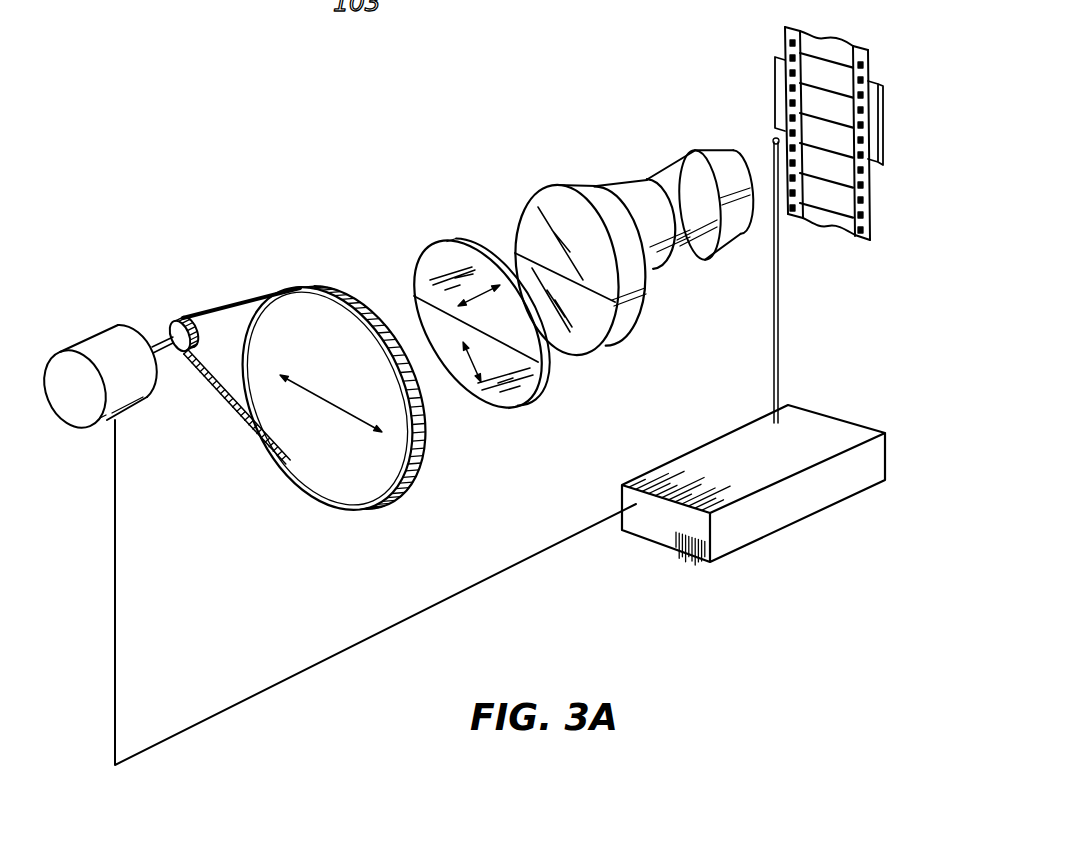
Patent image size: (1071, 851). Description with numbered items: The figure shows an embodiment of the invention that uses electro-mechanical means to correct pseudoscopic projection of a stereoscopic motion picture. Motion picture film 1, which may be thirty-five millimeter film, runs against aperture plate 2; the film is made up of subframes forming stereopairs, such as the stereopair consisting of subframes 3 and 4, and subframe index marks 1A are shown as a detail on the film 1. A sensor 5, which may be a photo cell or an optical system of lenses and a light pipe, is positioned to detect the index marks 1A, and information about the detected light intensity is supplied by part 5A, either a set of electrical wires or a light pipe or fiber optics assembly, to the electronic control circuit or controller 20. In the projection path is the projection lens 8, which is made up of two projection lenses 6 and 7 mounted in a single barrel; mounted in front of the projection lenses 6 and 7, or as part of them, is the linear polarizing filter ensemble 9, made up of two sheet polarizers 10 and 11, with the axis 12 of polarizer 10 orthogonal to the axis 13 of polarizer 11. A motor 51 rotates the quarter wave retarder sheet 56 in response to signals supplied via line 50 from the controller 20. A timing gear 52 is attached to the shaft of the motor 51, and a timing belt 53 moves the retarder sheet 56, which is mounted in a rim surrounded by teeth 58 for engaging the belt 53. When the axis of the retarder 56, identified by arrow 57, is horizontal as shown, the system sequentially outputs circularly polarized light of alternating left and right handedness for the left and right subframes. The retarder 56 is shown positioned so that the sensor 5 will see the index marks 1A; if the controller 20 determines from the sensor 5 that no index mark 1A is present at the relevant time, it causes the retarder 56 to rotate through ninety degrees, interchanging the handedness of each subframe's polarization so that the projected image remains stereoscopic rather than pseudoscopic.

The motion picture film 1 is at (853, 50).
The subframe index marks 1A is at (787, 67).
The aperture plate 2 is at (878, 83).
The subframe 3 is at (837, 107).
The subframe 4 is at (835, 130).
The sensor 5 is at (777, 140).
The part 5A is at (778, 290).
The projection lens 6 is at (641, 181).
The projection lens 7 is at (620, 345).
The projection lens 8 is at (545, 193).
The linear polarizing filter ensemble 9 is at (413, 277).
The sheet polarizer 10 is at (430, 245).
The sheet polarizer 11 is at (523, 405).
The axis 12 is at (482, 293).
The axis 13 is at (452, 380).
The electronic control circuit 20 is at (790, 520).
The line 50 is at (277, 687).
The motor 51 is at (97, 335).
The timing gear 52 is at (172, 320).
The timing belt 53 is at (250, 294).
The quarter wave retarder sheet 56 is at (307, 457).
The arrow 57 is at (343, 412).
The teeth 58 is at (421, 478).